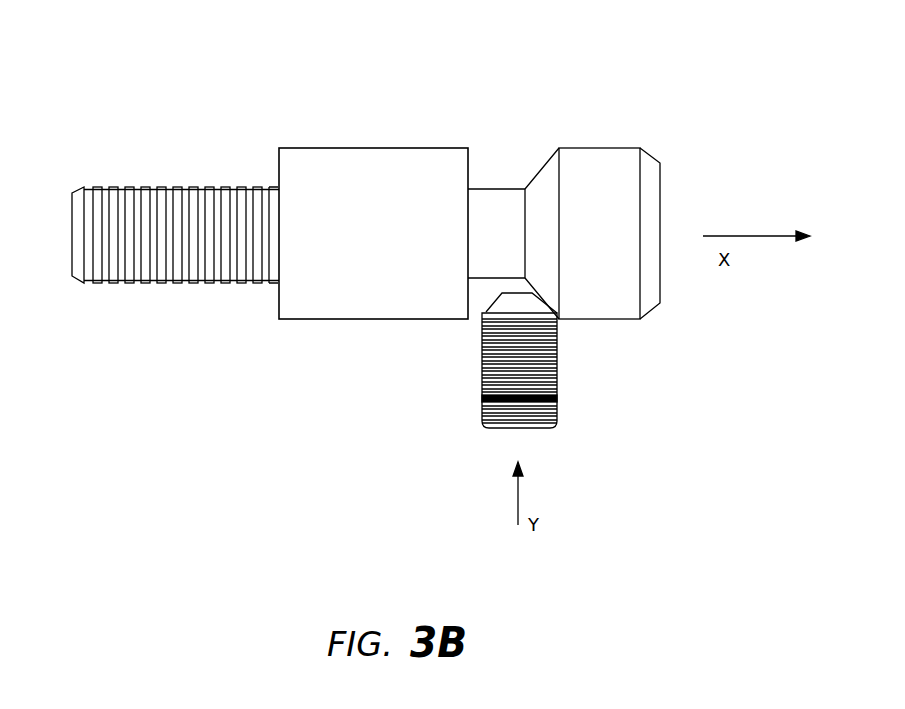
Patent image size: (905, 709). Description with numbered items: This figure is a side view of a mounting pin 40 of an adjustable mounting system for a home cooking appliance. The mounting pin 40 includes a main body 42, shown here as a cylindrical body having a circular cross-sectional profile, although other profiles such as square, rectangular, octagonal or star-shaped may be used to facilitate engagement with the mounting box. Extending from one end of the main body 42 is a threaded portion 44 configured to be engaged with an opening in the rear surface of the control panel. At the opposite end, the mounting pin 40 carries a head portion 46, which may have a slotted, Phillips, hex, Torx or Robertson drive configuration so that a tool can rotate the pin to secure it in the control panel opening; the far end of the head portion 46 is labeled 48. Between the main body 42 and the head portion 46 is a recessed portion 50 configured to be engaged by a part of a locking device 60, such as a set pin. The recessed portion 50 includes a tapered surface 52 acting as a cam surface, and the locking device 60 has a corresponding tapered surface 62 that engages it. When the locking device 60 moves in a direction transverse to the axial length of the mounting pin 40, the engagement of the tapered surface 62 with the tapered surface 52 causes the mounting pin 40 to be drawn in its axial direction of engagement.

The mounting pin 40 is at (228, 136).
The main body 42 is at (302, 320).
The threaded portion 44 is at (130, 284).
The head portion 46 is at (605, 148).
The head end chamfer 48 is at (660, 177).
The recessed portion 50 is at (498, 188).
The tapered surface 52 is at (548, 158).
The locking device 60 is at (483, 405).
The tapered surface 62 is at (490, 302).